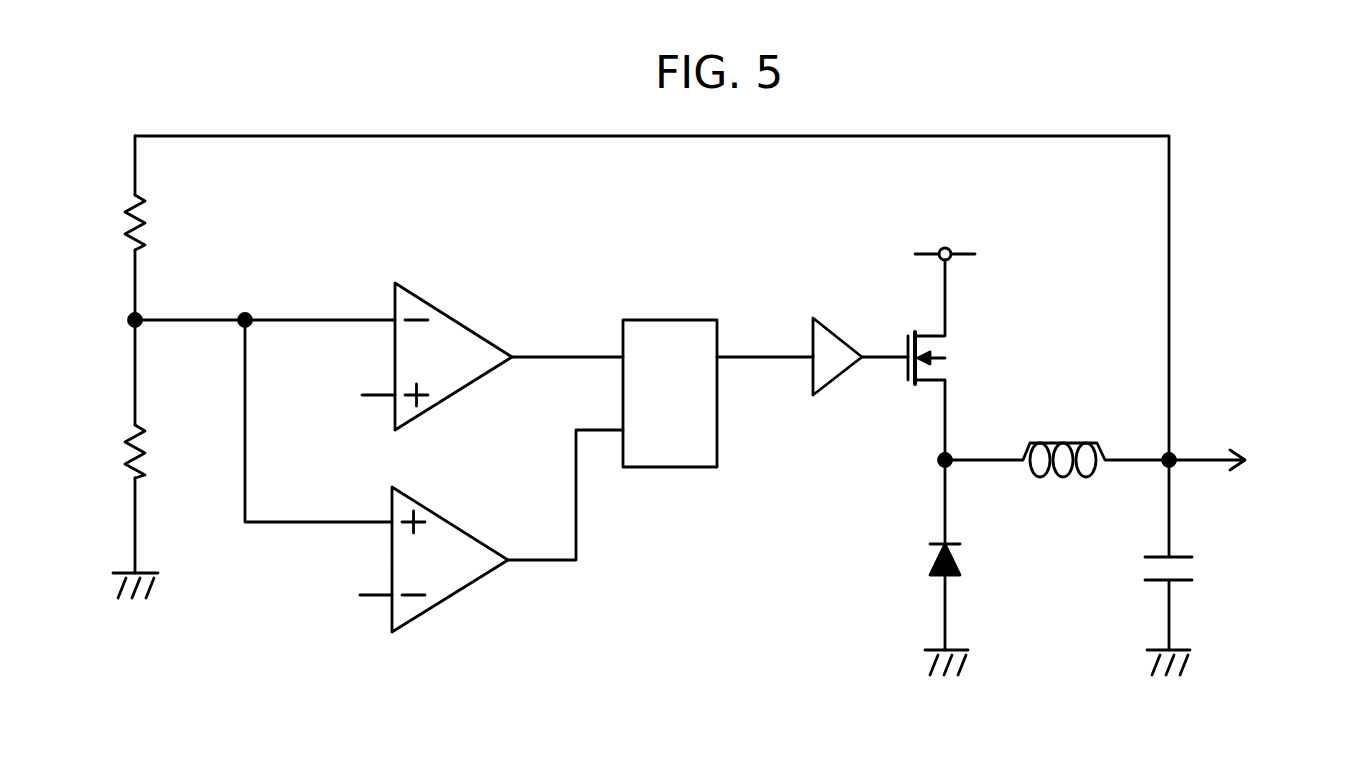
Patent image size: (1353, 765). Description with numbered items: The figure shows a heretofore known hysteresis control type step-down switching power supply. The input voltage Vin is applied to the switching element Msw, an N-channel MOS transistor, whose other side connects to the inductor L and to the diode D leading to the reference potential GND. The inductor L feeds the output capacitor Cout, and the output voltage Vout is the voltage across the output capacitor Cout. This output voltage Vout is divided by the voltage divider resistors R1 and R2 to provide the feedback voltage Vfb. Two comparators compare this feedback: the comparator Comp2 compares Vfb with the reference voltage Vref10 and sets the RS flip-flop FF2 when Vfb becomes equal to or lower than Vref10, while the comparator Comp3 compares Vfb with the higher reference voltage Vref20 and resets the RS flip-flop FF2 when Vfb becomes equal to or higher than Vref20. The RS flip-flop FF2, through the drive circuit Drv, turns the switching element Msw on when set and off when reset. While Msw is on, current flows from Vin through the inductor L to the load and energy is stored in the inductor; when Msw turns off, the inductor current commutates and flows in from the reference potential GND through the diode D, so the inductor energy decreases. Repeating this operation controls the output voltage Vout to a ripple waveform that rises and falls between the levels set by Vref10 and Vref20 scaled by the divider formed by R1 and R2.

The voltage divider resistor R1 is at (158, 222).
The voltage divider resistor R2 is at (155, 451).
The feedback voltage Vfb is at (262, 405).
The comparator Comp2 is at (509, 353).
The comparator Comp3 is at (507, 531).
The reference voltage Vref10 is at (330, 395).
The reference voltage Vref20 is at (328, 595).
The RS flip-flop FF2 is at (718, 378).
The drive circuit Drv is at (860, 346).
The switching element Msw is at (961, 360).
The input voltage Vin is at (968, 257).
The inductor L is at (1054, 442).
The output voltage Vout is at (1234, 460).
The diode D is at (961, 555).
The output capacitor Cout is at (1202, 555).
The reference potential GND is at (680, 624).